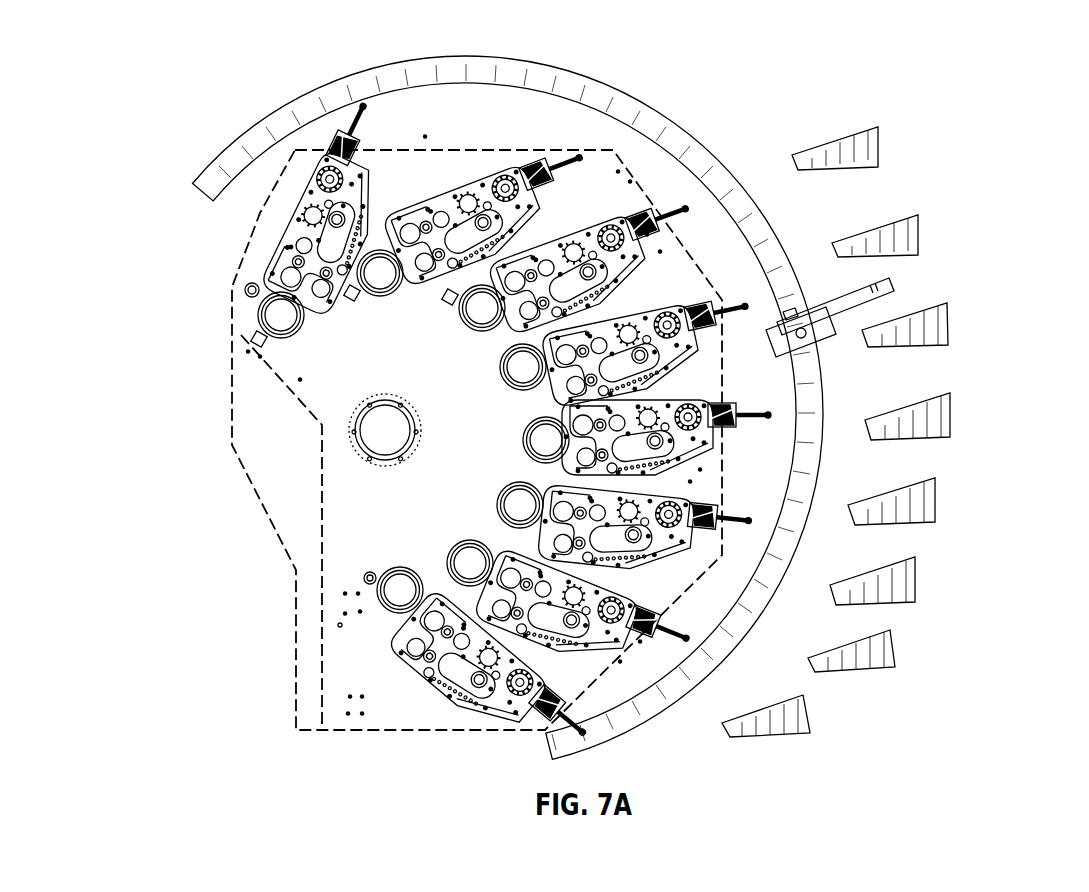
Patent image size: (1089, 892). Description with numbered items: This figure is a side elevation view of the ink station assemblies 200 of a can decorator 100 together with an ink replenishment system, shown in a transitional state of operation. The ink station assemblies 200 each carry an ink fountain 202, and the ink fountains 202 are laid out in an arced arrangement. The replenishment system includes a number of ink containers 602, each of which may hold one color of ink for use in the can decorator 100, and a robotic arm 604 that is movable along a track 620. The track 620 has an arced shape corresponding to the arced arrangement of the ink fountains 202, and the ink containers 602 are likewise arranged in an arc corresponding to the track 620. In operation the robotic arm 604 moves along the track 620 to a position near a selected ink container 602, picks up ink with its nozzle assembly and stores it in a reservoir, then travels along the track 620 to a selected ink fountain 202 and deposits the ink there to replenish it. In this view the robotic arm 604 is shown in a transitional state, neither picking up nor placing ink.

The can decorator 100 is at (216, 338).
The ink station assembly 200 is at (440, 683).
The ink fountain 202 is at (640, 647).
The ink container 602 is at (848, 698).
The robotic arm 604 is at (822, 300).
The track 620 is at (663, 92).